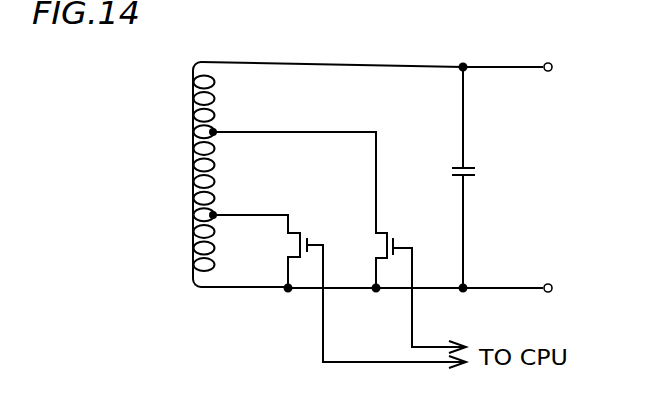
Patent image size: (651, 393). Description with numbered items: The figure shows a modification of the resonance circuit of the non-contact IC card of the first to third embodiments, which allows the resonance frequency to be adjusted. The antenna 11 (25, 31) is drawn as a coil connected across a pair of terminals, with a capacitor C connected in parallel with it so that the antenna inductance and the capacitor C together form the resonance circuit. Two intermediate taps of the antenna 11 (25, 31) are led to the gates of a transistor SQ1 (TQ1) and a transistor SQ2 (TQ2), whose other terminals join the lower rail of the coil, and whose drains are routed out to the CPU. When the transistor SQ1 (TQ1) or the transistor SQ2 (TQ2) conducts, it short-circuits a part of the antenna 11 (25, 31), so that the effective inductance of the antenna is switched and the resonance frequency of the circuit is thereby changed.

The antenna 11 is at (190, 172).
The antenna 25 is at (164, 174).
The antenna 31 is at (164, 174).
The transistor SQ1 is at (339, 265).
The transistor TQ1 is at (296, 232).
The transistor SQ2 is at (410, 242).
The transistor TQ2 is at (394, 242).
The capacitor C is at (478, 174).